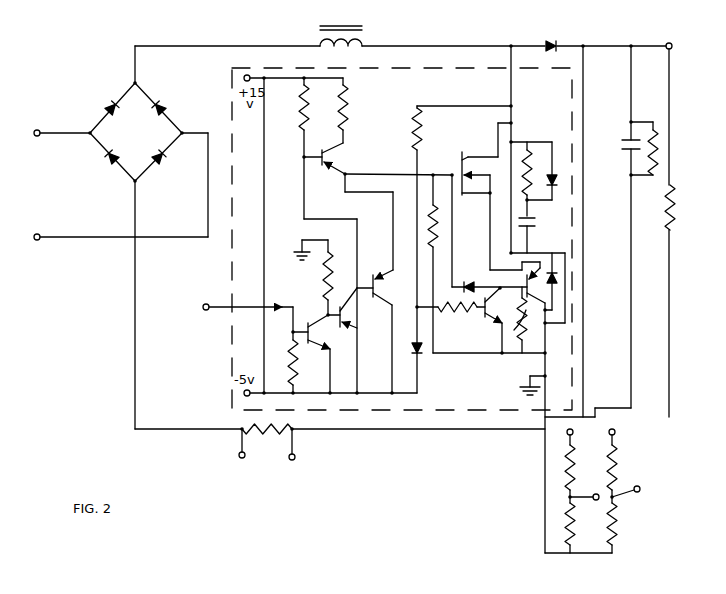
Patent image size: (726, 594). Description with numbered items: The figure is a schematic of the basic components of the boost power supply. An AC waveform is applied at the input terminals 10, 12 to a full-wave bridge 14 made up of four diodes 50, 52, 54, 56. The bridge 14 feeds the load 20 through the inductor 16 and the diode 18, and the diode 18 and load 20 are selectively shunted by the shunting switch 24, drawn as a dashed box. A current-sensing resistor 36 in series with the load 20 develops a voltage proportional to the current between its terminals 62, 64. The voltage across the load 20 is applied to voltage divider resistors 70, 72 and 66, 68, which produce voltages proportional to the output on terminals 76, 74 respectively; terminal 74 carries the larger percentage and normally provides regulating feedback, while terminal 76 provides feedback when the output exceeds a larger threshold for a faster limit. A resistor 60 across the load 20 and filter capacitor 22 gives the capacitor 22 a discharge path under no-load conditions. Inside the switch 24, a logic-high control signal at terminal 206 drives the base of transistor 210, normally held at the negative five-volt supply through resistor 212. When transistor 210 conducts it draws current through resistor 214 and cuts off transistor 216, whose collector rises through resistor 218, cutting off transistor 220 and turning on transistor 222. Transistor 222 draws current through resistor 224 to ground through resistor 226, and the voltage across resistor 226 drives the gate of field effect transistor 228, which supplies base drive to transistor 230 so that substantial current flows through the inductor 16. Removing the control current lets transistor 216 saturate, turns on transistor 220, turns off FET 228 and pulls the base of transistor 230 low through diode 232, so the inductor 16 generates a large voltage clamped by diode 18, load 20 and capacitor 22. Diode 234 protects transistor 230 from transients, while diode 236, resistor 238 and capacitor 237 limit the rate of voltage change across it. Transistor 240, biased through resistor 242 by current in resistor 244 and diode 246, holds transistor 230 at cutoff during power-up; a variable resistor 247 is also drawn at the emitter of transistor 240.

The AC input terminal 10 is at (38, 130).
The AC input terminal 12 is at (37, 234).
The full-wave bridge 14 is at (132, 113).
The inductor 16 is at (364, 34).
The diode 18 is at (556, 40).
The load 20 is at (664, 216).
The filter capacitor 22 is at (619, 142).
The shunting switch 24 is at (231, 80).
The current-sensing resistor 36 is at (272, 432).
The diode 50 is at (104, 102).
The diode 52 is at (106, 160).
The diode 54 is at (162, 108).
The diode 56 is at (162, 160).
The resistor 60 is at (660, 150).
The terminal 62 is at (241, 456).
The terminal 64 is at (294, 460).
The voltage divider resistor 66 is at (573, 433).
The voltage divider resistor 68 is at (572, 503).
The voltage divider resistor 70 is at (615, 433).
The voltage divider resistor 72 is at (623, 503).
The terminal 74 is at (594, 493).
The terminal 76 is at (638, 486).
The terminal 206 is at (216, 292).
The transistor 210 is at (314, 319).
The resistor 212 is at (288, 356).
The resistor 214 is at (336, 264).
The transistor 216 is at (346, 308).
The resistor 218 is at (304, 94).
The transistor 220 is at (390, 272).
The transistor 222 is at (332, 176).
The resistor 224 is at (348, 92).
The resistor 226 is at (436, 248).
The field effect transistor 228 is at (460, 170).
The transistor 230 is at (534, 274).
The diode 232 is at (468, 283).
The diode 234 is at (558, 276).
The diode 236 is at (556, 176).
The capacitor 237 is at (530, 232).
The resistor 238 is at (530, 147).
The transistor 240 is at (492, 320).
The resistor 242 is at (468, 310).
The resistor 244 is at (414, 122).
The diode 246 is at (422, 354).
The variable resistor 247 is at (522, 348).